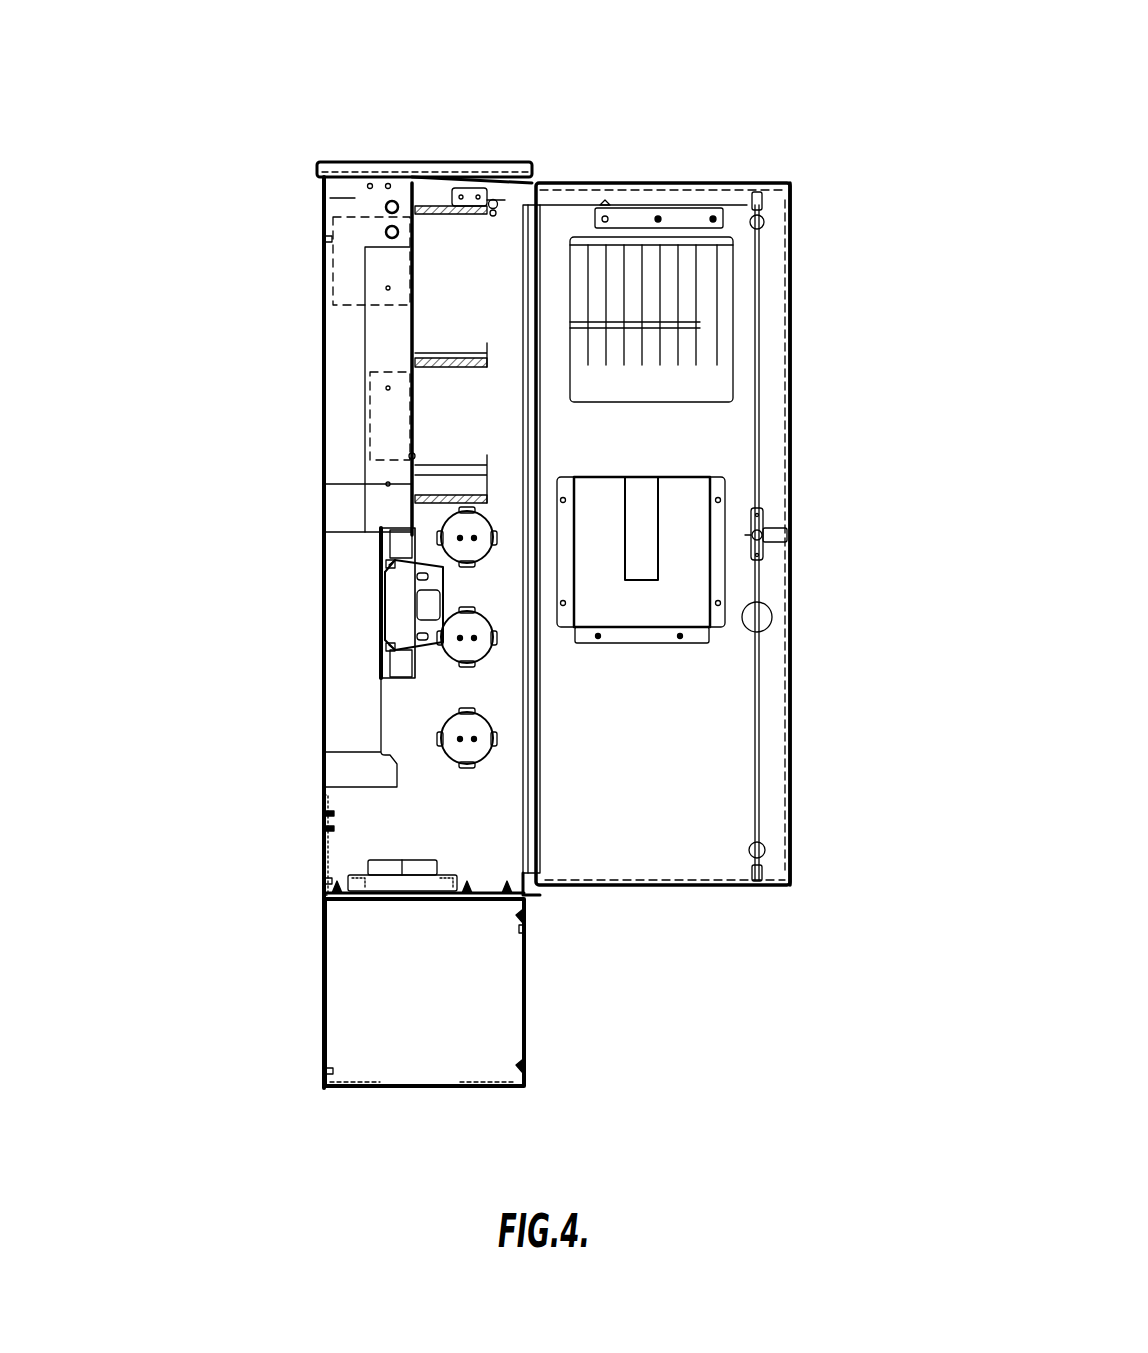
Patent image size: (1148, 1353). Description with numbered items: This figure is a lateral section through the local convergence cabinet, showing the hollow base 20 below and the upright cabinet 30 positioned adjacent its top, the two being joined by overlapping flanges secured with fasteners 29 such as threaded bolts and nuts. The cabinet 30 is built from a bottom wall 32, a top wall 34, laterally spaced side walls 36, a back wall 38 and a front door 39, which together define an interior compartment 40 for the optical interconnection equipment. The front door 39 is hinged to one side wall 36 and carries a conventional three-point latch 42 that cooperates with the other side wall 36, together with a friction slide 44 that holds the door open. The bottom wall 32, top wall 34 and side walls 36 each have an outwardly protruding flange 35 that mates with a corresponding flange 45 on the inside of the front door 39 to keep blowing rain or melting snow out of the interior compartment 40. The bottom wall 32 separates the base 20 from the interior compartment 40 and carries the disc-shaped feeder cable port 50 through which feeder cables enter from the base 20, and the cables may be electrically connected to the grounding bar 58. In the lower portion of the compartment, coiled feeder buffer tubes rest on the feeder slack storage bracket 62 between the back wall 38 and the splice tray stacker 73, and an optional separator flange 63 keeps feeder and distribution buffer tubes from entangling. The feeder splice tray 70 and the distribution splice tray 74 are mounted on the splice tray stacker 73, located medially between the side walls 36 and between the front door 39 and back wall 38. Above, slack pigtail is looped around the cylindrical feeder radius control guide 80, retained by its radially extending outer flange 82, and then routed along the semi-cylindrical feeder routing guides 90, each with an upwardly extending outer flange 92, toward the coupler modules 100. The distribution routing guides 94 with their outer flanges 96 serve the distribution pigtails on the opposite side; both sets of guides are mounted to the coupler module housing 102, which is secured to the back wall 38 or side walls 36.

The base 20 is at (290, 985).
The fasteners 29 is at (335, 897).
The cabinet 30 is at (243, 570).
The bottom wall 32 is at (490, 882).
The top wall 34 is at (352, 165).
The flange 35 is at (542, 795).
The side walls 36 is at (481, 297).
The back wall 38 is at (320, 338).
The front door 39 is at (654, 732).
The interior compartment 40 is at (460, 408).
The three-point latch 42 is at (767, 527).
The friction slide 44 is at (573, 205).
The flange 45 is at (790, 730).
The feeder cable port 50 is at (362, 862).
The grounding bar 58 is at (325, 813).
The feeder slack storage bracket 62 is at (358, 787).
The separator flange 63 is at (352, 637).
The feeder splice tray 70 is at (428, 606).
The splice tray stacker 73 is at (390, 615).
The distribution splice tray 74 is at (405, 596).
The feeder radius control guide 80 is at (480, 522).
The outer flange 82 is at (480, 648).
The feeder routing guide 90 is at (487, 343).
The outer flange 92 is at (460, 353).
The distribution routing guide 94 is at (433, 210).
The outer flange 96 is at (492, 200).
The coupler module 100 is at (347, 260).
The coupler module housing 102 is at (345, 198).